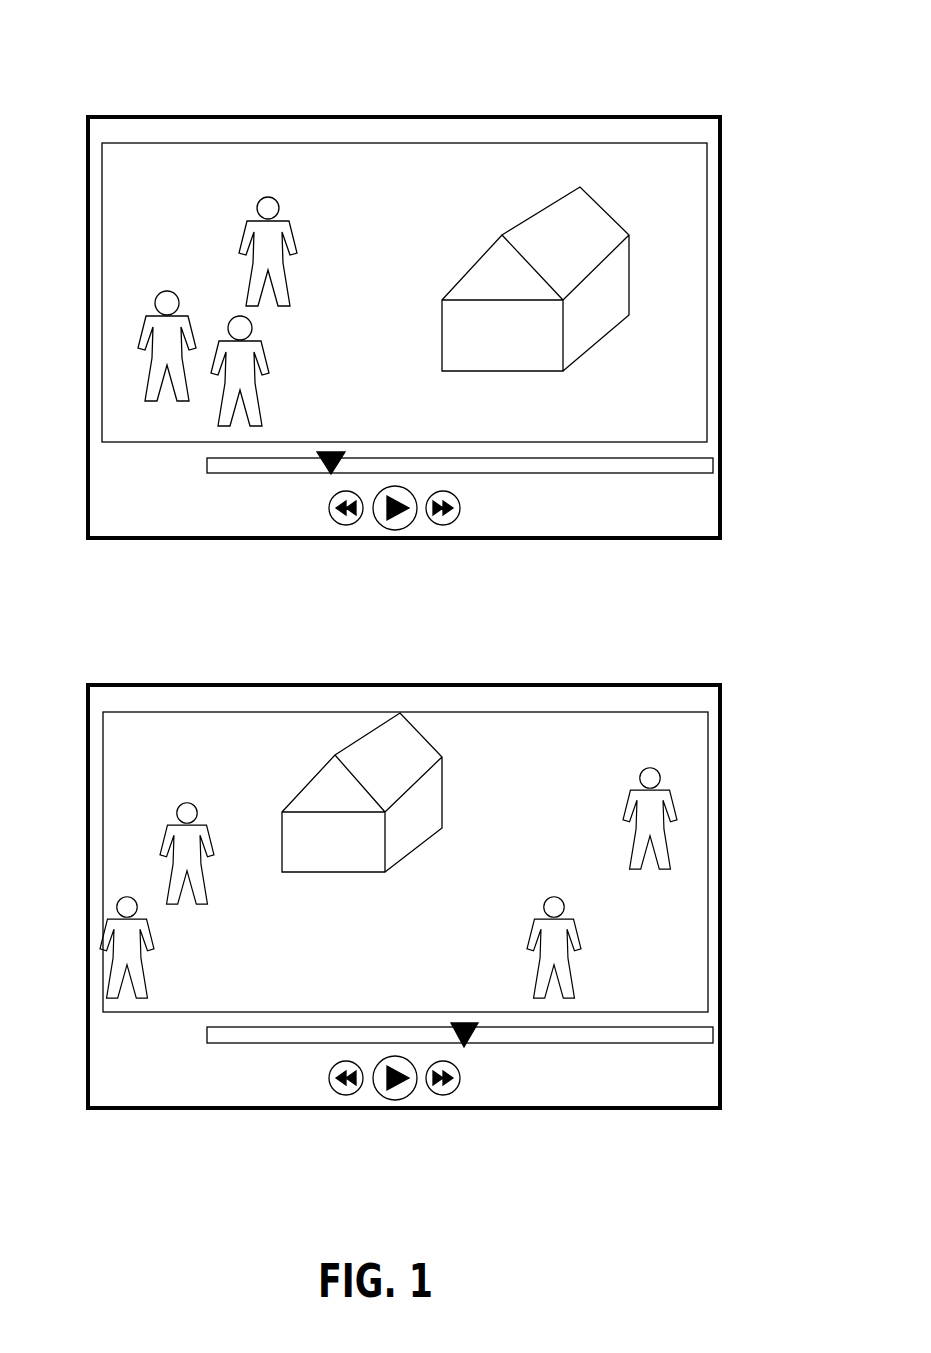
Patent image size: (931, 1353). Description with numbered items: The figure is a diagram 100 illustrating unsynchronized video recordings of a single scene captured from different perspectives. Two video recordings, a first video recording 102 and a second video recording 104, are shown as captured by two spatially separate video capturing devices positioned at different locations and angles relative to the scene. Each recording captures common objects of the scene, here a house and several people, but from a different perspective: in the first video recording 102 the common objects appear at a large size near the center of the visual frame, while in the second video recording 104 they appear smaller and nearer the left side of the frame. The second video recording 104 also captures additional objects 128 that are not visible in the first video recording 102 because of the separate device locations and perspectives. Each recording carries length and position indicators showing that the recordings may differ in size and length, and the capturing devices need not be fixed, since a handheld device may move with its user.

The diagram 100 is at (687, 50).
The first video recording 102 is at (523, 108).
The second video recording 104 is at (627, 672).
The additional object 128 is at (575, 873).